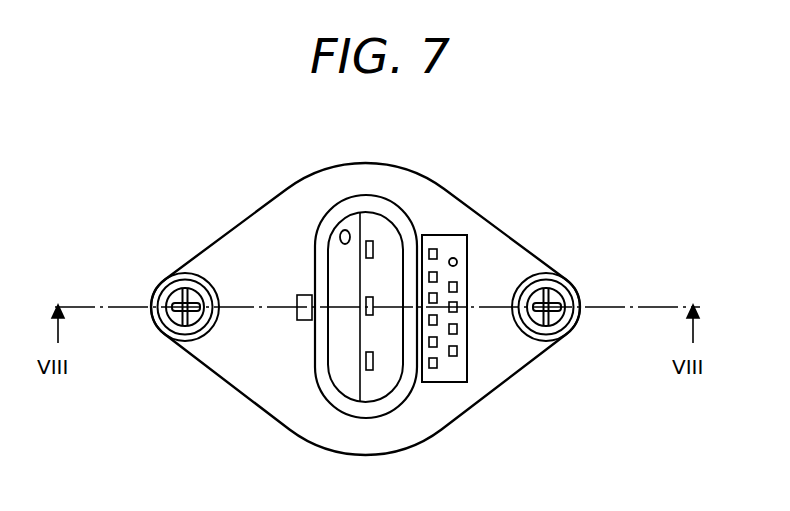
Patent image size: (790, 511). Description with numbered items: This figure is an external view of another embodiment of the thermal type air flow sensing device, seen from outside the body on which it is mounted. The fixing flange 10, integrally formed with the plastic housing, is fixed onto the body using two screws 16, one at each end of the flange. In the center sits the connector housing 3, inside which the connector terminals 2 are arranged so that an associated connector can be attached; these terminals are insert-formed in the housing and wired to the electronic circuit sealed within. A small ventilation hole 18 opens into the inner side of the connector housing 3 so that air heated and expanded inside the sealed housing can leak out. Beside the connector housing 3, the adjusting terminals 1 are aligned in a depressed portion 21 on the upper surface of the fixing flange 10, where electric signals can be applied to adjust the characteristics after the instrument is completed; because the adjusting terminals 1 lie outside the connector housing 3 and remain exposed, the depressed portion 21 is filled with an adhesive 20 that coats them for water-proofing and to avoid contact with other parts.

The adjusting terminals 1 is at (458, 260).
The connector terminals 2 is at (363, 367).
The connector housing 3 is at (407, 213).
The fixing flange 10 is at (215, 343).
The screws 16 is at (176, 292).
The ventilation hole 18 is at (340, 232).
The adhesive 20 is at (500, 340).
The depressed portion 21 is at (445, 372).